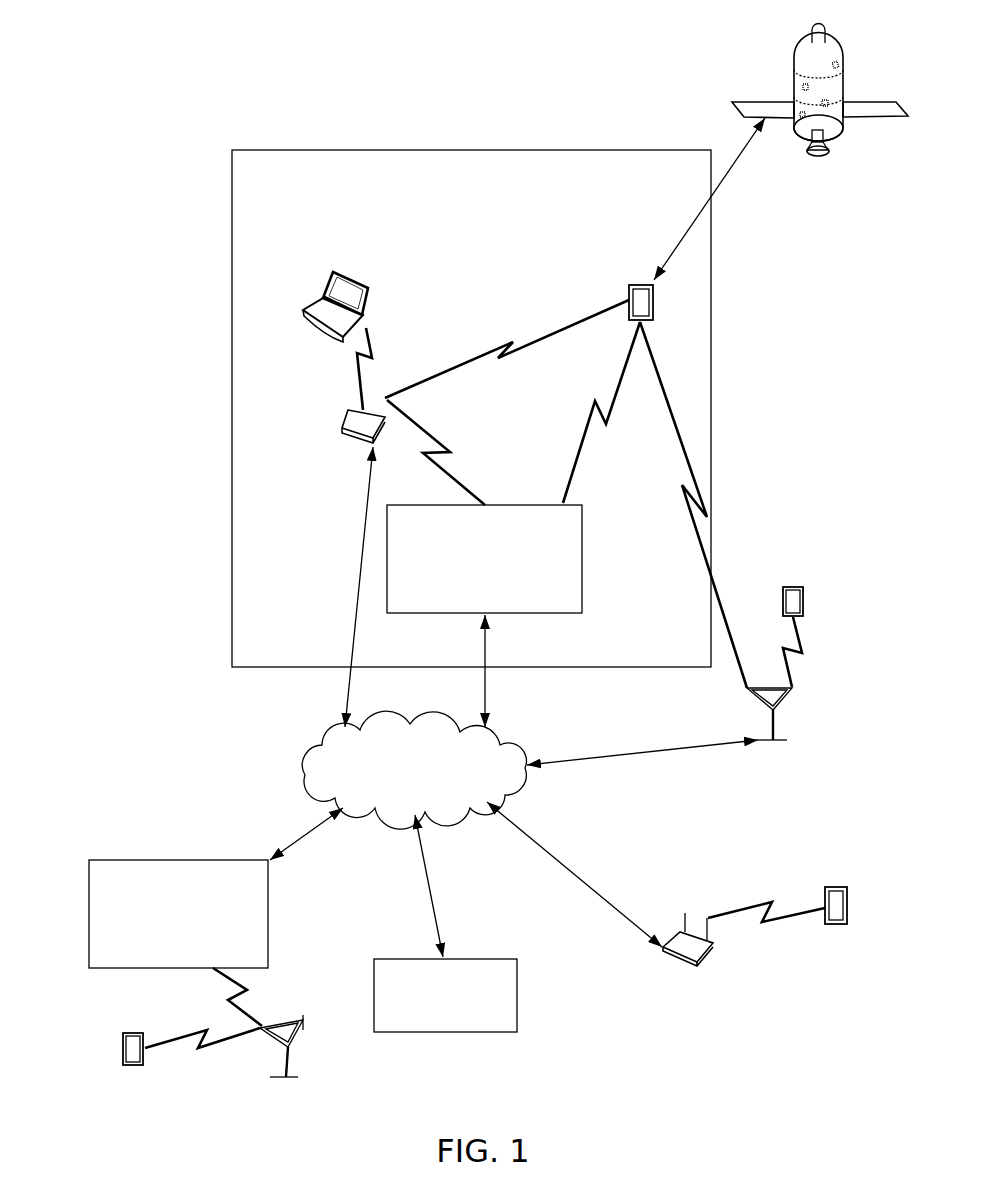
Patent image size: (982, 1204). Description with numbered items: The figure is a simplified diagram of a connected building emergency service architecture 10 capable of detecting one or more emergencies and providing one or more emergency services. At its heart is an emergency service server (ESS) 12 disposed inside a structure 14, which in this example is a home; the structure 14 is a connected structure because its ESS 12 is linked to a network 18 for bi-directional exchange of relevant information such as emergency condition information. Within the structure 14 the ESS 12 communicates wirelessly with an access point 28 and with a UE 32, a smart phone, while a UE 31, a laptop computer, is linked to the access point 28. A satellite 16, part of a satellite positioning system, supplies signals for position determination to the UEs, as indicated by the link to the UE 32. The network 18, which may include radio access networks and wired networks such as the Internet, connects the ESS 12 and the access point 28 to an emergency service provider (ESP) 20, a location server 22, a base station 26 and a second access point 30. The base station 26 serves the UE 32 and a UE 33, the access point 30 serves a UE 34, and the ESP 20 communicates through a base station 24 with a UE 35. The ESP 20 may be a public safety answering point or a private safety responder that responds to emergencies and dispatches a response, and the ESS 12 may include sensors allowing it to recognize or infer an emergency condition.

The architecture 10 is at (148, 130).
The emergency service server 12 is at (582, 558).
The structure 14 is at (481, 150).
The satellite 16 is at (793, 78).
The network 18 is at (305, 768).
The emergency service provider 20 is at (175, 860).
The location server 22 is at (517, 1015).
The base station 24 is at (277, 1080).
The base station 26 is at (777, 710).
The access point 28 is at (347, 418).
The access point 30 is at (697, 963).
The UE 31 is at (333, 268).
The UE 32 is at (651, 283).
The UE 33 is at (798, 585).
The UE 34 is at (833, 888).
The UE 35 is at (123, 1033).